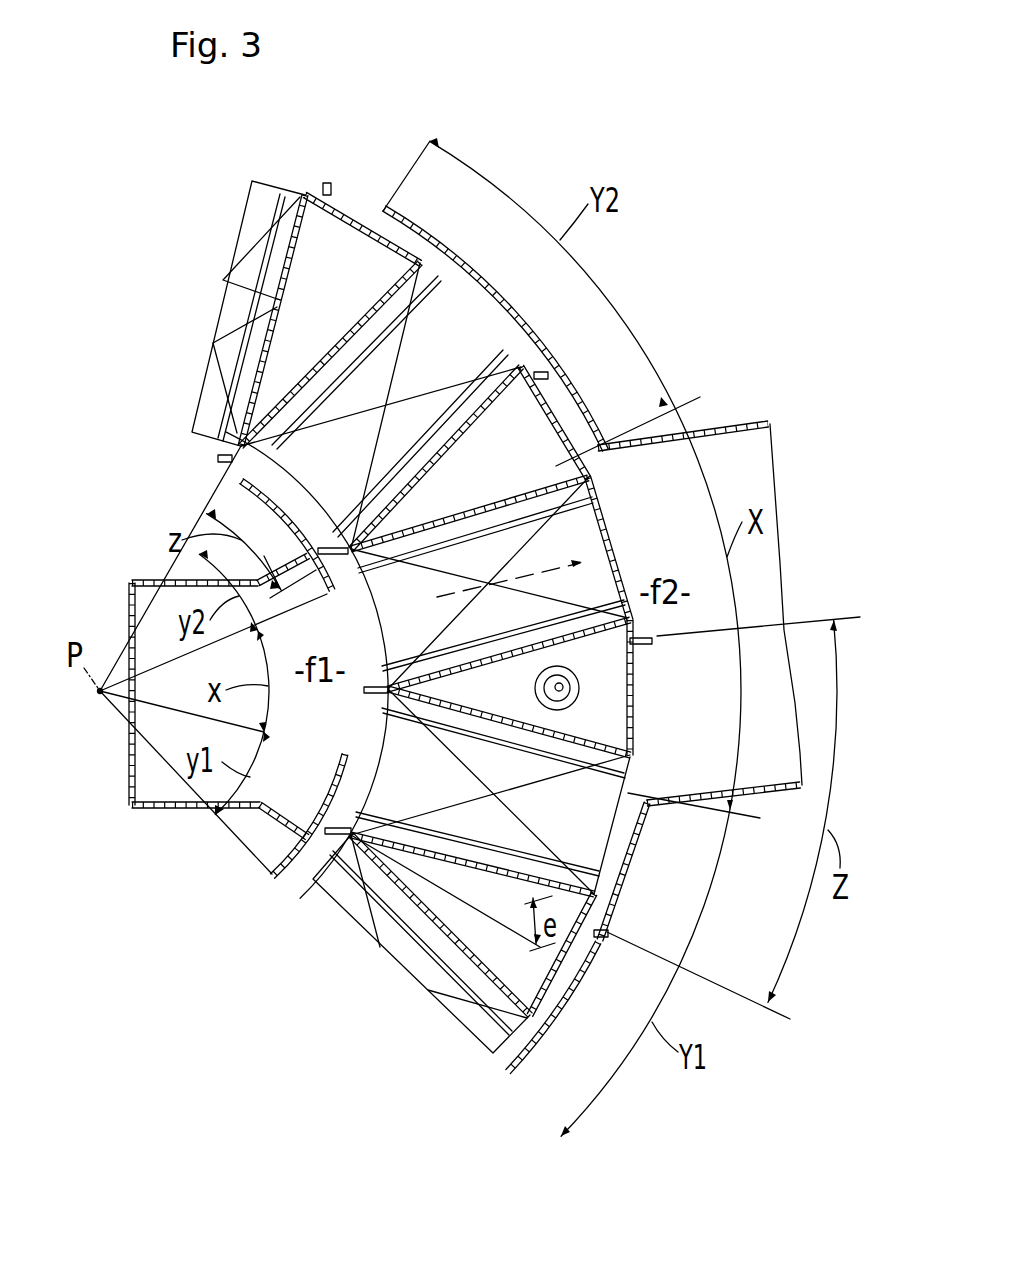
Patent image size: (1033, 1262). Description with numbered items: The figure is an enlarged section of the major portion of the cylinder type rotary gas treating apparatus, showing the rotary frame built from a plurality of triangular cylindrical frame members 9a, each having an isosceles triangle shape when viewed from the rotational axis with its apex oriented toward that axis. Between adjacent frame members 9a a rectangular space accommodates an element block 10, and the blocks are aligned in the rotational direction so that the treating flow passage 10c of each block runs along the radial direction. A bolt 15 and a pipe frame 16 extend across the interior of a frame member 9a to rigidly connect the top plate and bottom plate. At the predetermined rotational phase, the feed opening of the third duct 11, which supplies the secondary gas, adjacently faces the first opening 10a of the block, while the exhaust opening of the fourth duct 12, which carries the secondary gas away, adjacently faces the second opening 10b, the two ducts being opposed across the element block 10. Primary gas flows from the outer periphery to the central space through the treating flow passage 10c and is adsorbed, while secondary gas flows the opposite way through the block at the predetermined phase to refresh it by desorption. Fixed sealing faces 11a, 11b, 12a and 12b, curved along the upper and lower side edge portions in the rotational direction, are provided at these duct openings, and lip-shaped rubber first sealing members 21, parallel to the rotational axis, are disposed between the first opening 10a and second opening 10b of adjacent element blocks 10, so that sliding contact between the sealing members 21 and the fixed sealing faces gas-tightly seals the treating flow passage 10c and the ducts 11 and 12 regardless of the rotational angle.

The triangular cylindrical frame member 9a is at (280, 300).
The element block 10 is at (252, 180).
The first opening 10a is at (370, 757).
The second opening 10b is at (608, 530).
The treating flow passage 10c is at (485, 592).
The third duct 11 is at (130, 768).
The fixed sealing face 11a is at (327, 797).
The fixed sealing face 11b is at (297, 512).
The fourth duct 12 is at (753, 420).
The fixed sealing face 12a is at (593, 967).
The fixed sealing face 12b is at (528, 333).
The bolt 15 is at (534, 688).
The pipe frame 16 is at (580, 690).
The first sealing member 21 is at (329, 183).